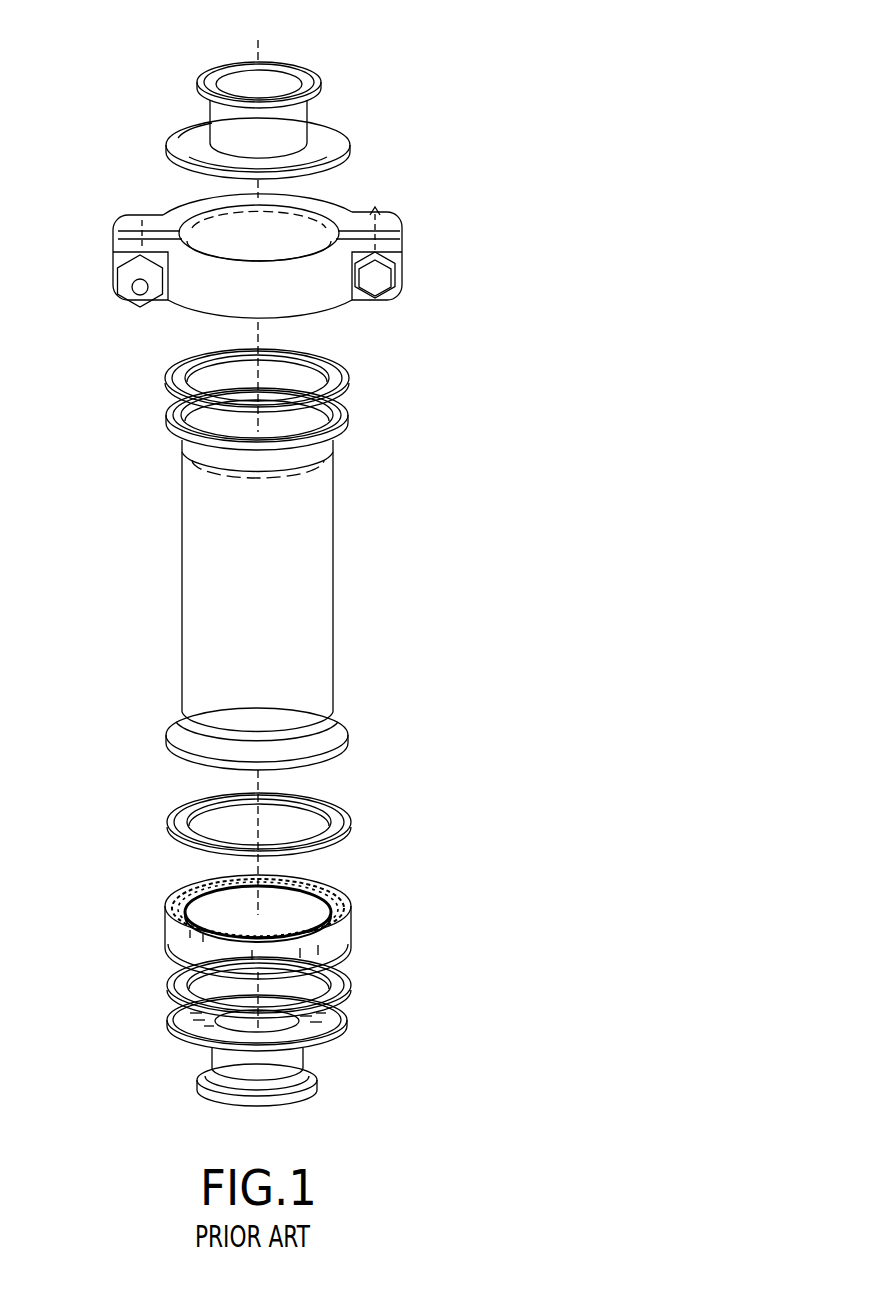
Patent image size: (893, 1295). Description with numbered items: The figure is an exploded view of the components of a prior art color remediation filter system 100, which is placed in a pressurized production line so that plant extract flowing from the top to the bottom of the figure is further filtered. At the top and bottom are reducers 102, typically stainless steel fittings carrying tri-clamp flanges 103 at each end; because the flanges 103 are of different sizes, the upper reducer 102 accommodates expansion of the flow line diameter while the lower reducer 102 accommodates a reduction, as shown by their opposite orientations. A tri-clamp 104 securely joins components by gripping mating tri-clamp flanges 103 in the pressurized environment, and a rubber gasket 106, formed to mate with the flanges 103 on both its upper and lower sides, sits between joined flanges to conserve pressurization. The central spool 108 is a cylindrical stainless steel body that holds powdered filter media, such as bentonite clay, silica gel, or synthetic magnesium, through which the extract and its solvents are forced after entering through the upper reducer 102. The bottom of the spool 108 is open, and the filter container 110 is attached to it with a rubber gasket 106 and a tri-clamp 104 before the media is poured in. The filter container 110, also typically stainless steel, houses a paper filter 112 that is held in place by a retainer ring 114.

The color remediation filter system 100 is at (508, 100).
The reducer 102 is at (293, 120).
The tri-clamp flange 103 is at (318, 78).
The tri-clamp 104 is at (402, 252).
The rubber gasket 106 is at (343, 372).
The spool 108 is at (333, 623).
The filter container 110 is at (234, 912).
The paper filter 112 is at (347, 912).
The retainer ring 114 is at (313, 880).